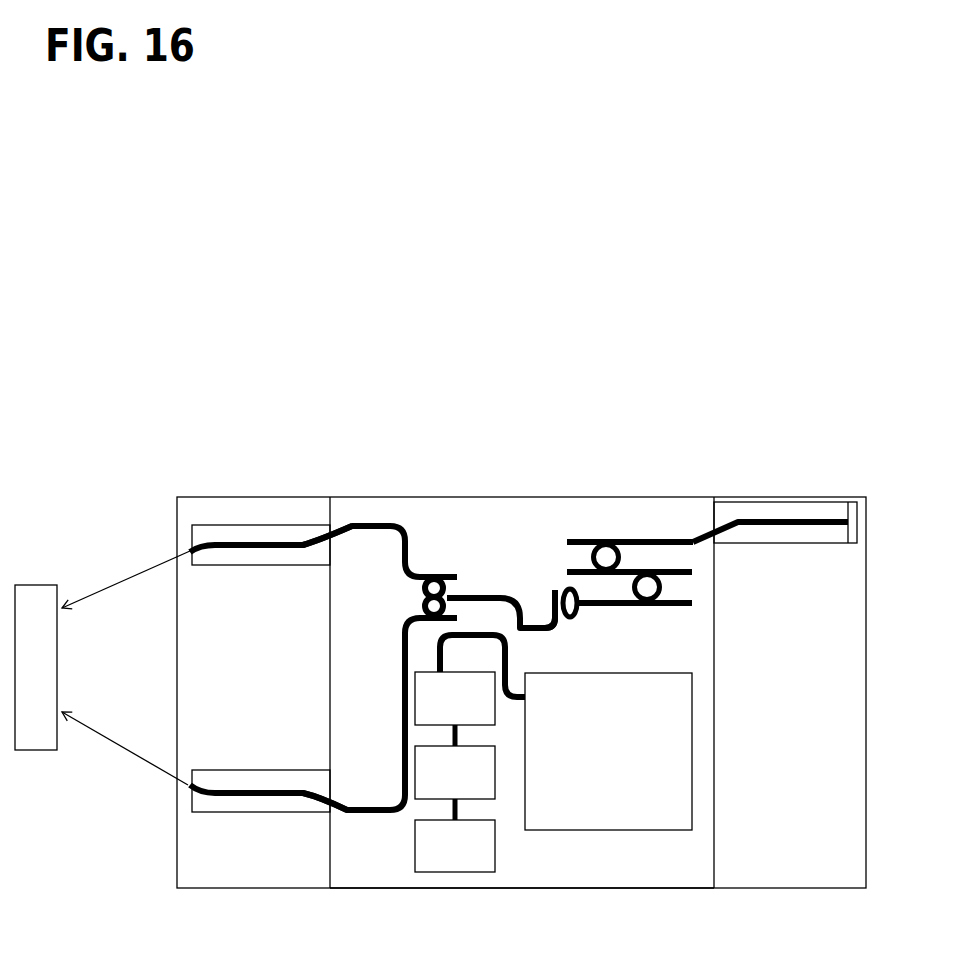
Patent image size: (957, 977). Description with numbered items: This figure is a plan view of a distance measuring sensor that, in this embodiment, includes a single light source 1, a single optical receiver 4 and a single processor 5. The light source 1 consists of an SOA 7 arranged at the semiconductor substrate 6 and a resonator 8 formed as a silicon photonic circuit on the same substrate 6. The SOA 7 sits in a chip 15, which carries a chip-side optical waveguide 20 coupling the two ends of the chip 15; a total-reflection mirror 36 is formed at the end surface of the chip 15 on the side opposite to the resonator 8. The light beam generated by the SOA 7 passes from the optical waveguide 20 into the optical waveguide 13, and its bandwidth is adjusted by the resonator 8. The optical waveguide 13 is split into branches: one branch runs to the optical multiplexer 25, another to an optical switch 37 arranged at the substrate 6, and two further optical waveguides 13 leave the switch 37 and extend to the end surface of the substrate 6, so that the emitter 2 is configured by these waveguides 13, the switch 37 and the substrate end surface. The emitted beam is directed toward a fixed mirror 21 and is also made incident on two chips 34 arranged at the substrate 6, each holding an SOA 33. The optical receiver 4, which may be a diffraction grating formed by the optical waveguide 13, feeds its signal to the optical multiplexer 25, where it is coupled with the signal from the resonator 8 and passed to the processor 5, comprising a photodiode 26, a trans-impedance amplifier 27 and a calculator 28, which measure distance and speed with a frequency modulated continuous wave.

The light source 1 is at (663, 523).
The emitter 2 is at (337, 525).
The optical receiver 4 is at (635, 830).
The processor 5 is at (478, 880).
The semiconductor substrate 6 is at (866, 585).
The semiconductor optical amplifier 7 is at (787, 517).
The resonator 8 is at (603, 540).
The optical waveguide 13 is at (370, 523).
The chip 15 is at (807, 502).
The optical waveguide 20 is at (743, 522).
The fixed mirror 21 is at (32, 595).
The optical multiplexer 25 is at (490, 627).
The photodiode 26 is at (495, 708).
The trans-impedance amplifier 27 is at (495, 778).
The calculator 28 is at (440, 873).
The semiconductor optical amplifier 33 is at (265, 535).
The chip 34 is at (228, 523).
The total-reflection mirror 36 is at (850, 510).
The optical switch 37 is at (433, 575).